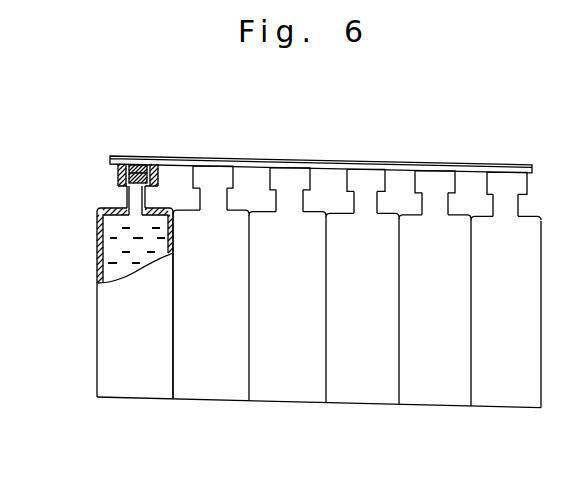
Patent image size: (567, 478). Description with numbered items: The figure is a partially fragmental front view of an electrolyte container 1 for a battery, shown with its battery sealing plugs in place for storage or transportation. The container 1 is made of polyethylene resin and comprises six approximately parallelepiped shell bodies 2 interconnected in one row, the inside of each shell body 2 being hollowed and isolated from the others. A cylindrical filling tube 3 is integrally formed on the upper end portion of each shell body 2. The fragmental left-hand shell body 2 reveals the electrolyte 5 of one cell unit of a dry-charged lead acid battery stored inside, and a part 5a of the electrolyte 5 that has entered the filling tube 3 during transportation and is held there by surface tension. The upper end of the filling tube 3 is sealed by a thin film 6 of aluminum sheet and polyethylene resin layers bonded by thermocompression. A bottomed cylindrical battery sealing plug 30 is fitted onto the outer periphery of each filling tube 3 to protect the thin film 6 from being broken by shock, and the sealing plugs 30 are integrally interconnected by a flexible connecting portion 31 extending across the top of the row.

The electrolyte container 1 is at (86, 352).
The shell body 2 is at (117, 388).
The filling tube 3 is at (118, 200).
The electrolyte 5 is at (100, 268).
The part of the electrolyte 5a is at (124, 192).
The thin film 6 is at (167, 158).
The battery sealing plug 30 is at (118, 172).
The flexible connecting portion 31 is at (324, 160).